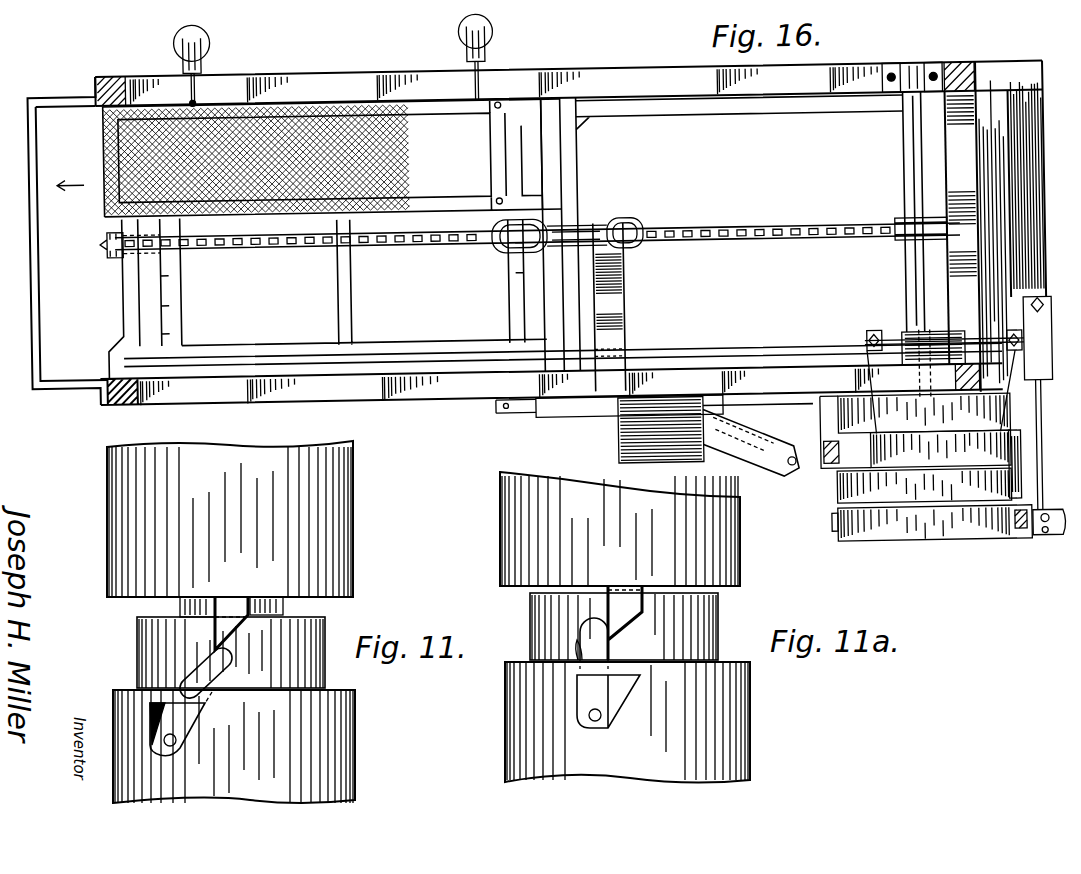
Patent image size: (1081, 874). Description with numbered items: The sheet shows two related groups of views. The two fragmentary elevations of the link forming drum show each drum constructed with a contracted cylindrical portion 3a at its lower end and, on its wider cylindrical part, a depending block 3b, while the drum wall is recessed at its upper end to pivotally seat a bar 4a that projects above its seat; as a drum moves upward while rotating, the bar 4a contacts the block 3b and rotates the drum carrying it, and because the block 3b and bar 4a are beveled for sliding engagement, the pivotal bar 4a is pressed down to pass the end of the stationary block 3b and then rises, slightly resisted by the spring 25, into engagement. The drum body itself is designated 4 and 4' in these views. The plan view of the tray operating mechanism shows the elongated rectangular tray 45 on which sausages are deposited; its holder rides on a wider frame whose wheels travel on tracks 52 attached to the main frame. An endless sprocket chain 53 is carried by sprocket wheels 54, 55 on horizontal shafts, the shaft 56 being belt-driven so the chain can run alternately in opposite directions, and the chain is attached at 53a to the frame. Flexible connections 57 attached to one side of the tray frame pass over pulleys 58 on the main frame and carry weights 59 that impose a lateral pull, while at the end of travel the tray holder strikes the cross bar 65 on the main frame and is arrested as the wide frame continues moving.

In FIG. 16, the tray 45 is at (330, 110).
In FIG. 16, the tracks 52 is at (667, 129).
In FIG. 16, the endless sprocket chain 53 is at (690, 238).
In FIG. 16, the chain attachment point 53a is at (345, 248).
In FIG. 16, the sprocket wheel 54 is at (115, 262).
In FIG. 16, the sprocket wheel 55 is at (907, 257).
In FIG. 16, the horizontal shaft 56 is at (910, 181).
In FIG. 16, the flexible connection 57 is at (192, 84).
In FIG. 16, the pulley 58 is at (212, 45).
In FIG. 16, the weight 59 is at (177, 34).
In FIG. 16, the cross bar 65 is at (40, 315).
In FIG. 11, the contracted cylindrical portion 3a is at (290, 610).
In FIG. 11A, the contracted cylindrical portion 3a is at (738, 588).
In FIG. 11, the depending block 3b is at (231, 617).
In FIG. 11A, the depending block 3b is at (625, 623).
In FIG. 11, the spring 25 is at (183, 668).
In FIG. 11A, the spring 25 is at (576, 650).
In FIG. 11, the bar 4a is at (190, 715).
In FIG. 11A, the bar 4a is at (608, 682).
In FIG. 11A, the lower block 4 is at (645, 722).
In FIG. 11, the lower block 4' is at (254, 744).